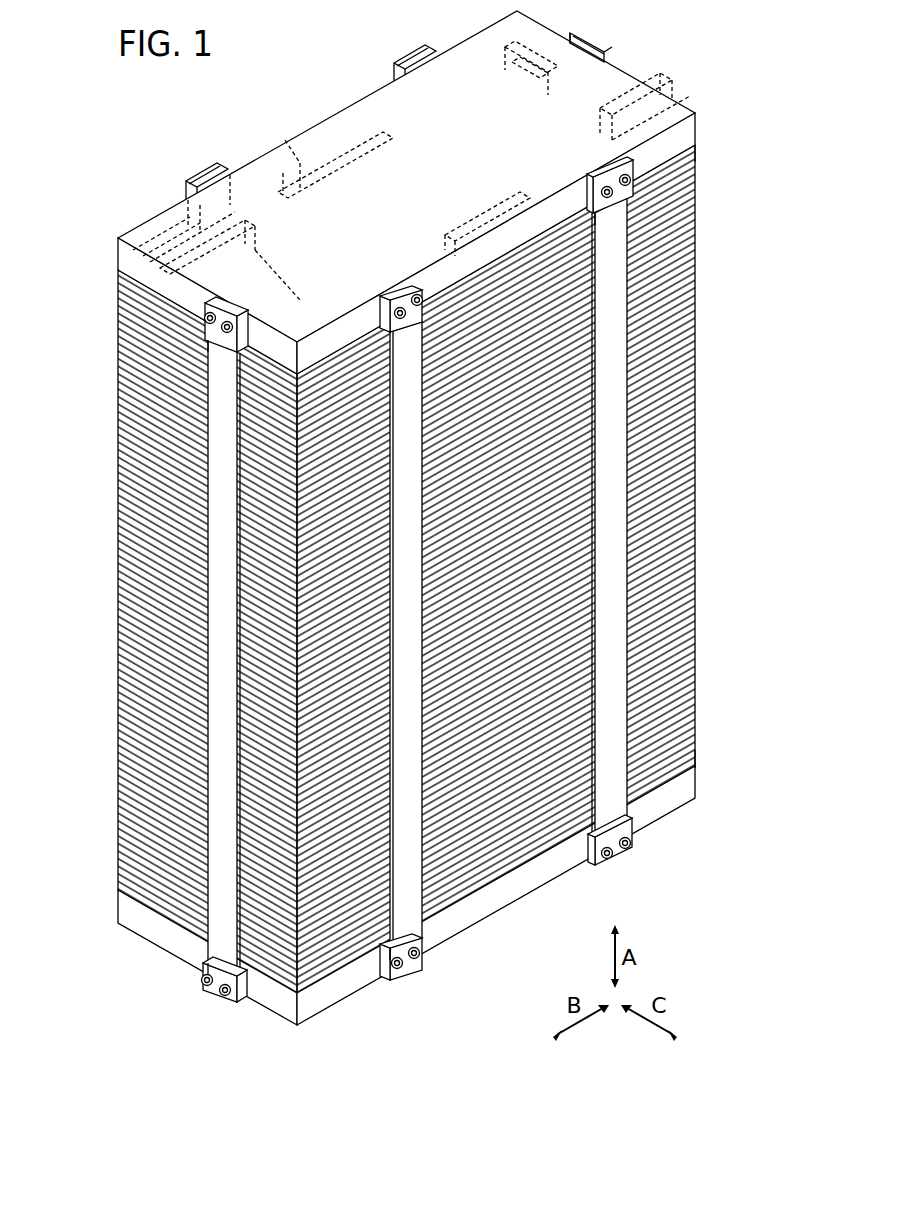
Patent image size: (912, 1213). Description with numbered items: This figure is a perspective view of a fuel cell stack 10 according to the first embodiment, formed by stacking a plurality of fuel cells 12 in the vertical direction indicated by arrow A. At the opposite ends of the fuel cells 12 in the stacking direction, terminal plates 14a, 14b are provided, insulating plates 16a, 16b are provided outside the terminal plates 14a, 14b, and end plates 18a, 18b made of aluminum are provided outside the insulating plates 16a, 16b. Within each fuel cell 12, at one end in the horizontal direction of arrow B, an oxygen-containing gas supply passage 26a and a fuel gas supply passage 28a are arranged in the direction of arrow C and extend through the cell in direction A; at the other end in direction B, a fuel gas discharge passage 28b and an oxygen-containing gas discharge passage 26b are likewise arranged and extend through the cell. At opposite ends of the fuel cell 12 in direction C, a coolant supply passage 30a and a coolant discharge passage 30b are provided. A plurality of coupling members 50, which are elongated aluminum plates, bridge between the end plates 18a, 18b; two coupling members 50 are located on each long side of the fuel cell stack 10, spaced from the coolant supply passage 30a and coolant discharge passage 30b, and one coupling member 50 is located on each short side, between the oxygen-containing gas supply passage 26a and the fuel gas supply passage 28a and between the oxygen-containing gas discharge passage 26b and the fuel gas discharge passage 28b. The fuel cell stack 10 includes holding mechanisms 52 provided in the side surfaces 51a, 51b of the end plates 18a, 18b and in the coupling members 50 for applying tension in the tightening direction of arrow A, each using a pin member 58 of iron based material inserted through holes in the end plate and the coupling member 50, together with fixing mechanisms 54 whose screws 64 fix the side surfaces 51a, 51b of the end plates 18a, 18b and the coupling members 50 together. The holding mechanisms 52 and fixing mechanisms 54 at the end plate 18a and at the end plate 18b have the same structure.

The fuel cell stack 10 is at (146, 111).
The fuel cells 12 is at (700, 585).
The terminal plate 14a is at (697, 757).
The terminal plate 14b is at (697, 158).
The insulating plate 16a is at (695, 764).
The insulating plate 16b is at (697, 147).
The end plate 18a is at (684, 806).
The end plate 18b is at (663, 90).
The oxygen-containing gas supply passage 26a is at (612, 118).
The oxygen-containing gas discharge passage 26b is at (205, 285).
The fuel gas supply passage 28a is at (518, 80).
The fuel gas discharge passage 28b is at (282, 332).
The coolant supply passage 30a is at (302, 160).
The coolant discharge passage 30b is at (455, 240).
The coupling member 50 is at (613, 402).
The side surface 51a is at (272, 1006).
The side surface 51b is at (118, 252).
The holding mechanism 52 is at (391, 291).
The fixing mechanism 54 is at (384, 306).
The pin member 58 is at (401, 288).
The screws 64 is at (416, 308).